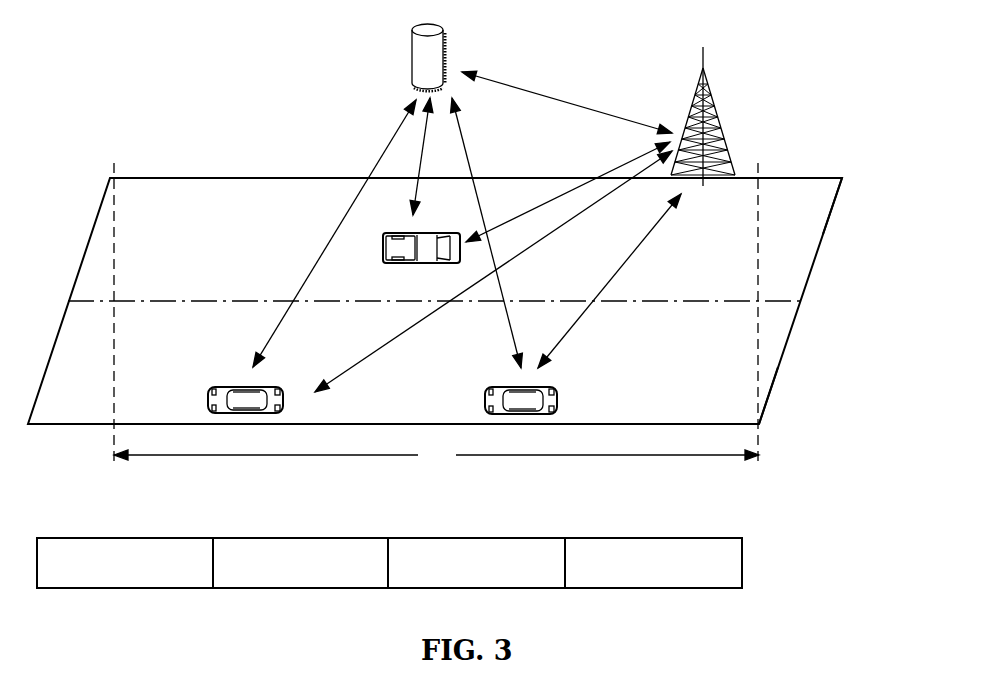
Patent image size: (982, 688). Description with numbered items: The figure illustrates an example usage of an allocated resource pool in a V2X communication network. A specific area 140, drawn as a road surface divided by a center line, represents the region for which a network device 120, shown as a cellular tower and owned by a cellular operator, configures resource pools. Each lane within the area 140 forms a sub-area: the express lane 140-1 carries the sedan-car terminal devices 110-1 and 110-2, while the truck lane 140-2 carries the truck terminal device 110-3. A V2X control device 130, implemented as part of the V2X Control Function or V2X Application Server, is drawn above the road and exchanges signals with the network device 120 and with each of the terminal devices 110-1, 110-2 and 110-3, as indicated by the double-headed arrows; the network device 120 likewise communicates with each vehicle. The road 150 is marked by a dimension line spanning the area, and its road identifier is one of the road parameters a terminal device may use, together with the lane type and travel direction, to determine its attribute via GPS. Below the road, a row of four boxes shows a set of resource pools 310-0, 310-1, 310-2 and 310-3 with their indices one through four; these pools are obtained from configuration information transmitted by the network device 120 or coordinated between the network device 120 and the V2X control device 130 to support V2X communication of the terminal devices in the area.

The terminal device 110-1 is at (535, 387).
The terminal device 110-2 is at (237, 387).
The terminal device 110-3 is at (395, 233).
The network device 120 is at (706, 76).
The V2X control device 130 is at (440, 26).
The area 140 is at (797, 178).
The express lane 140-1 is at (781, 368).
The truck lane 140-2 is at (826, 234).
The road 150 is at (436, 455).
The resource pool 310-0 is at (83, 538).
The resource pool 310-1 is at (260, 538).
The resource pool 310-2 is at (437, 538).
The resource pool 310-3 is at (625, 538).